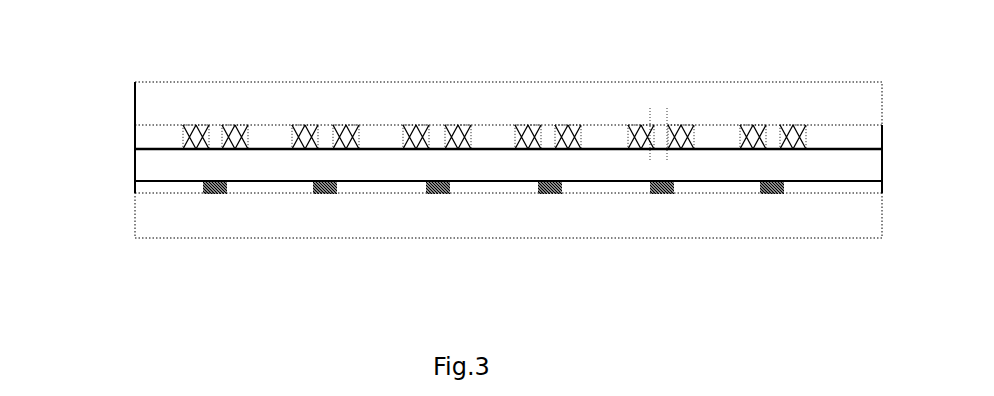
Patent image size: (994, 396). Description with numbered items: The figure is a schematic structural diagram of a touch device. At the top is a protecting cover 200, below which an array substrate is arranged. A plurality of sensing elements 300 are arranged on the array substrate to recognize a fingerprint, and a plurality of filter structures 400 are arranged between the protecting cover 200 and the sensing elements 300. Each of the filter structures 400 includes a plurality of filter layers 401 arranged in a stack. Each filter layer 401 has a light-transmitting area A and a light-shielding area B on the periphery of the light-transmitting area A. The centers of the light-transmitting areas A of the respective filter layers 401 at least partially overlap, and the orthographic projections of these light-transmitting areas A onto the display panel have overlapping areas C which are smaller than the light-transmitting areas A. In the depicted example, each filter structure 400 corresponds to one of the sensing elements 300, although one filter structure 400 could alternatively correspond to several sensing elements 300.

The protecting cover 200 is at (845, 111).
The sensing elements 300 is at (773, 195).
The filter structures 400 is at (450, 87).
The filter layers 401 is at (434, 87).
The light-transmitting area A is at (547, 127).
The light-shielding area B is at (513, 125).
The overlapping areas C is at (658, 162).